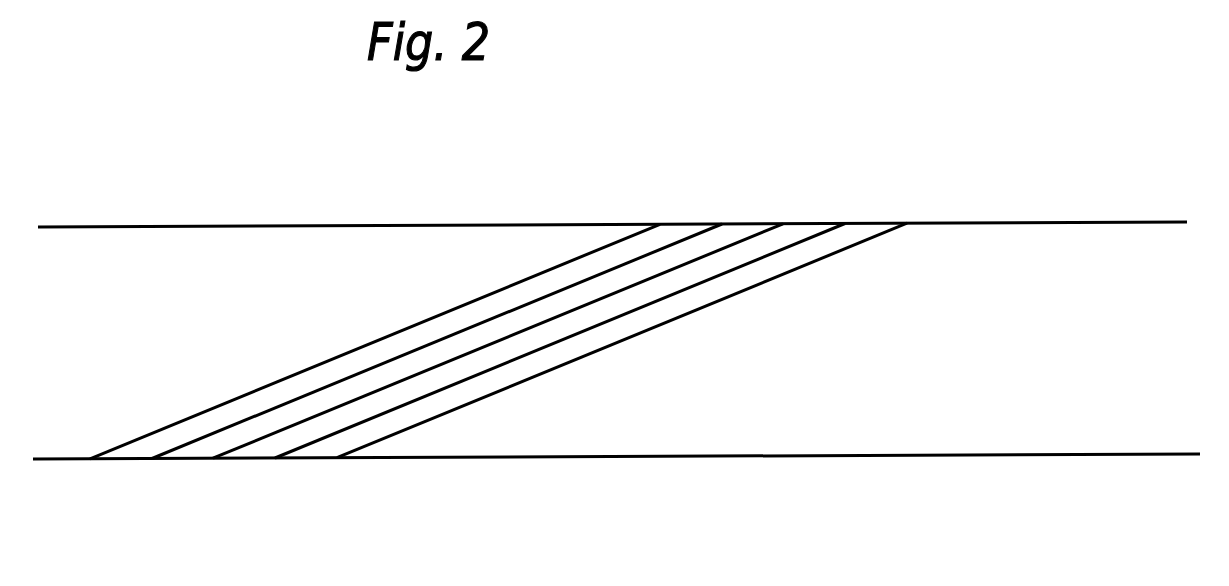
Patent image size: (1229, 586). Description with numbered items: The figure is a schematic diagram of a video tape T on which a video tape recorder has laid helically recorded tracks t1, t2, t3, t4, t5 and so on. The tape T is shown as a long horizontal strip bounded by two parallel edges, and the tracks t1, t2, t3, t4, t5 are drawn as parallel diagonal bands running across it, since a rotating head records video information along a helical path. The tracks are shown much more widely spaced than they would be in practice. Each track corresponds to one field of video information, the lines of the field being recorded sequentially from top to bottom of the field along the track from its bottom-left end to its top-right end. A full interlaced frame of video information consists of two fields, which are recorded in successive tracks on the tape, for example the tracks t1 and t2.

The video tape T is at (123, 257).
The helically recorded track t1 is at (122, 442).
The helically recorded track t2 is at (195, 442).
The helically recorded track t3 is at (250, 443).
The helically recorded track t4 is at (312, 443).
The helically recorded track t5 is at (402, 430).